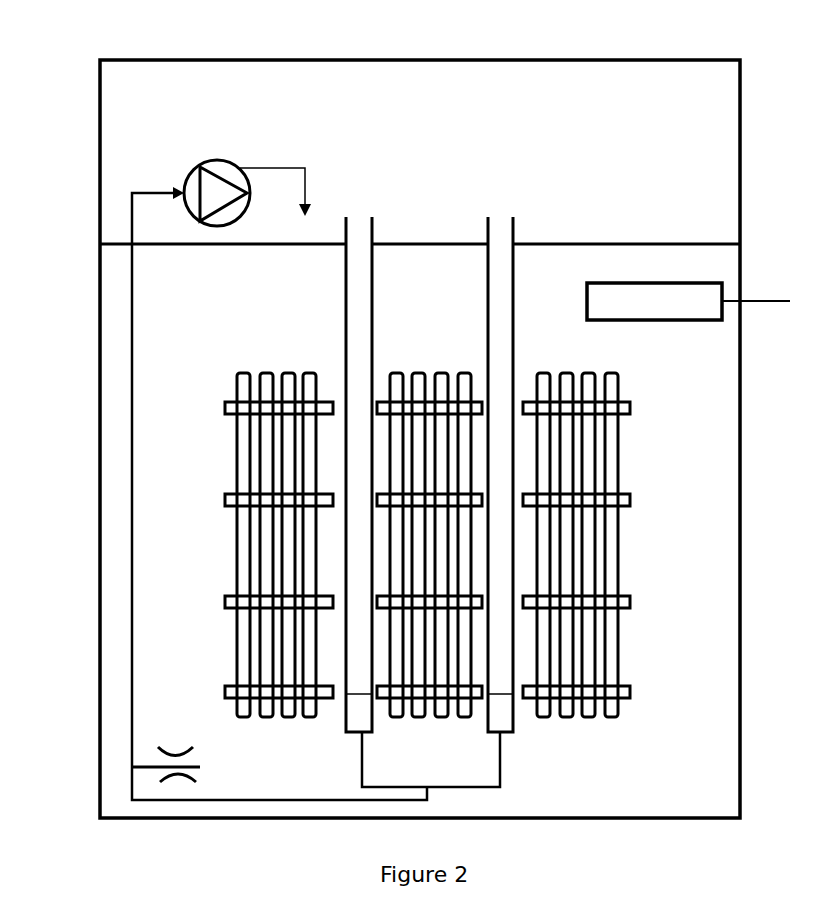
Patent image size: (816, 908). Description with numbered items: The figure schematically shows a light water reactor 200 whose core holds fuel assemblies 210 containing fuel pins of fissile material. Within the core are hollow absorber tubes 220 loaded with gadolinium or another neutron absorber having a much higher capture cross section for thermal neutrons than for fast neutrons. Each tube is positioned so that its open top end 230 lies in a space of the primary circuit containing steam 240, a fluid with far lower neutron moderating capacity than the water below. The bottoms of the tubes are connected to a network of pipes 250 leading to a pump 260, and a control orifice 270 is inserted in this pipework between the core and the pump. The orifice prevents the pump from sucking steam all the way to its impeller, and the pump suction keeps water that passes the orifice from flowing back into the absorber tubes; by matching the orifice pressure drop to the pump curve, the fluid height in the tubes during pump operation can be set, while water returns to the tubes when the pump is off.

The light water reactor 200 is at (420, 417).
The fuel assemblies 210 is at (228, 433).
The hollow absorber tubes 220 is at (481, 316).
The open top end of the tube 230 is at (498, 210).
The steam 240 is at (620, 132).
The network of pipes 250 is at (493, 767).
The pump 260 is at (209, 148).
The control orifice 270 is at (136, 758).